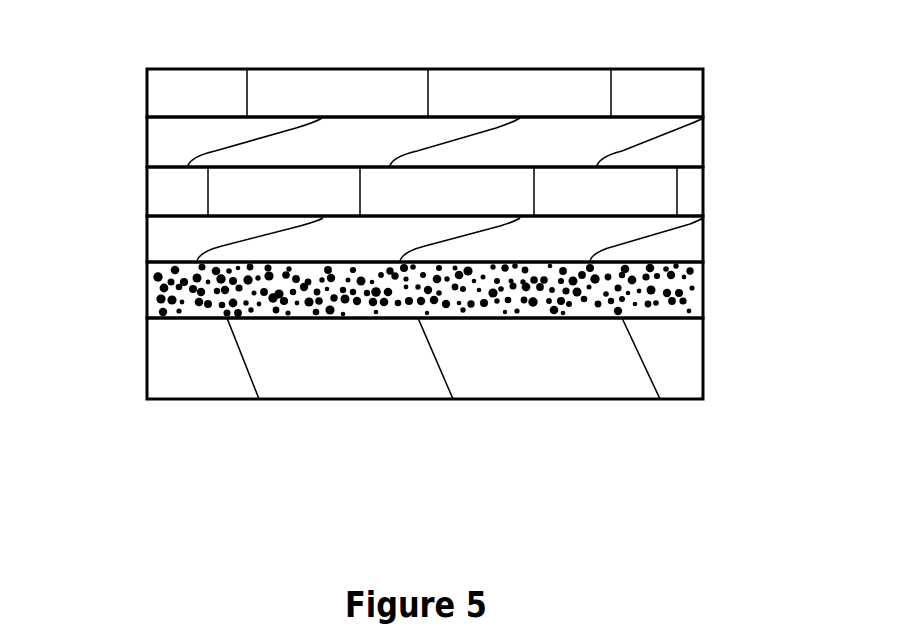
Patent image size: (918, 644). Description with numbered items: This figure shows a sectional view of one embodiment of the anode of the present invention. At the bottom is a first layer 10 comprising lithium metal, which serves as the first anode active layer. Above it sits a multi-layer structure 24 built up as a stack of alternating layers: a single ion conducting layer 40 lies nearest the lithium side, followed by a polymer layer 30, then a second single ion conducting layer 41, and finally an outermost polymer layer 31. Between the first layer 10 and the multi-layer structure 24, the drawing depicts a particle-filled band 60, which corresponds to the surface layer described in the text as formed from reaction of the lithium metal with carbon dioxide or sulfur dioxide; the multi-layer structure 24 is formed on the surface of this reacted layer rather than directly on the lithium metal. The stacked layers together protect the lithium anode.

The multi-layer structure 24 is at (147, 72).
The polymer layer 31 is at (703, 92).
The single ion conducting layer 41 is at (703, 137).
The polymer layer 30 is at (703, 185).
The single ion conducting layer 40 is at (703, 241).
The particle-filled layer 60 is at (703, 288).
The first layer 10 is at (703, 355).